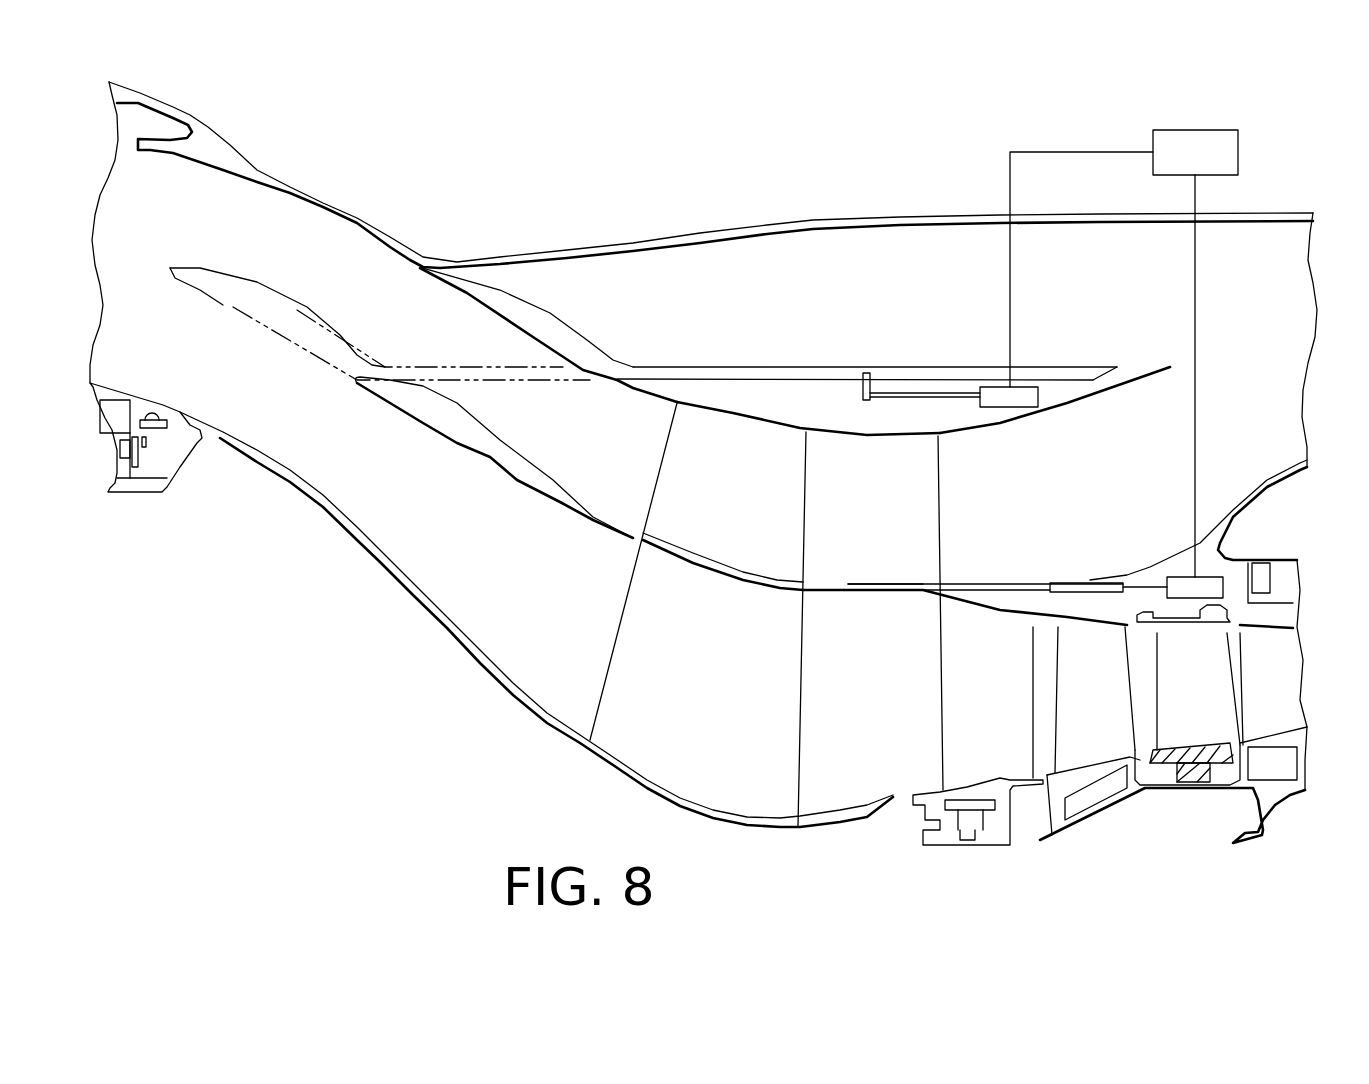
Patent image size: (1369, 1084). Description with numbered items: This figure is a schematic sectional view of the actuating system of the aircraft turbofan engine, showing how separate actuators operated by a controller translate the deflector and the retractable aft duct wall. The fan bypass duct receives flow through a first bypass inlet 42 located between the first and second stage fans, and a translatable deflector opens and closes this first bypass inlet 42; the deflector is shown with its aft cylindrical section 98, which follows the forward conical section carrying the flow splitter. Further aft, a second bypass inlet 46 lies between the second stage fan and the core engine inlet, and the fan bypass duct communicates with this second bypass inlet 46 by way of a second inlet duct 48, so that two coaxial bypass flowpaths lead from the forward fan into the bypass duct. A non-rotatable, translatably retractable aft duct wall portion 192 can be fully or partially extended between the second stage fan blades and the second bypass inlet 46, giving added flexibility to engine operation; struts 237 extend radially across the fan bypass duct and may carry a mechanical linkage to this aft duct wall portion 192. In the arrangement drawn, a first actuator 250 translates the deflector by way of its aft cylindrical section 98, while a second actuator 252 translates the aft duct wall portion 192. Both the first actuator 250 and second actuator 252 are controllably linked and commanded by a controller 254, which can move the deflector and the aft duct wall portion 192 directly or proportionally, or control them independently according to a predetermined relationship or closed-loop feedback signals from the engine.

The first bypass inlet 42 is at (567, 288).
The aft cylindrical section 98 is at (822, 367).
The first actuator 250 is at (1013, 387).
The controller 254 is at (1187, 130).
The second inlet duct 48 is at (1055, 488).
The second bypass inlet 46 is at (885, 513).
The struts 237 is at (1020, 557).
The second actuator 252 is at (1187, 577).
The aft duct wall portion 192 is at (872, 590).